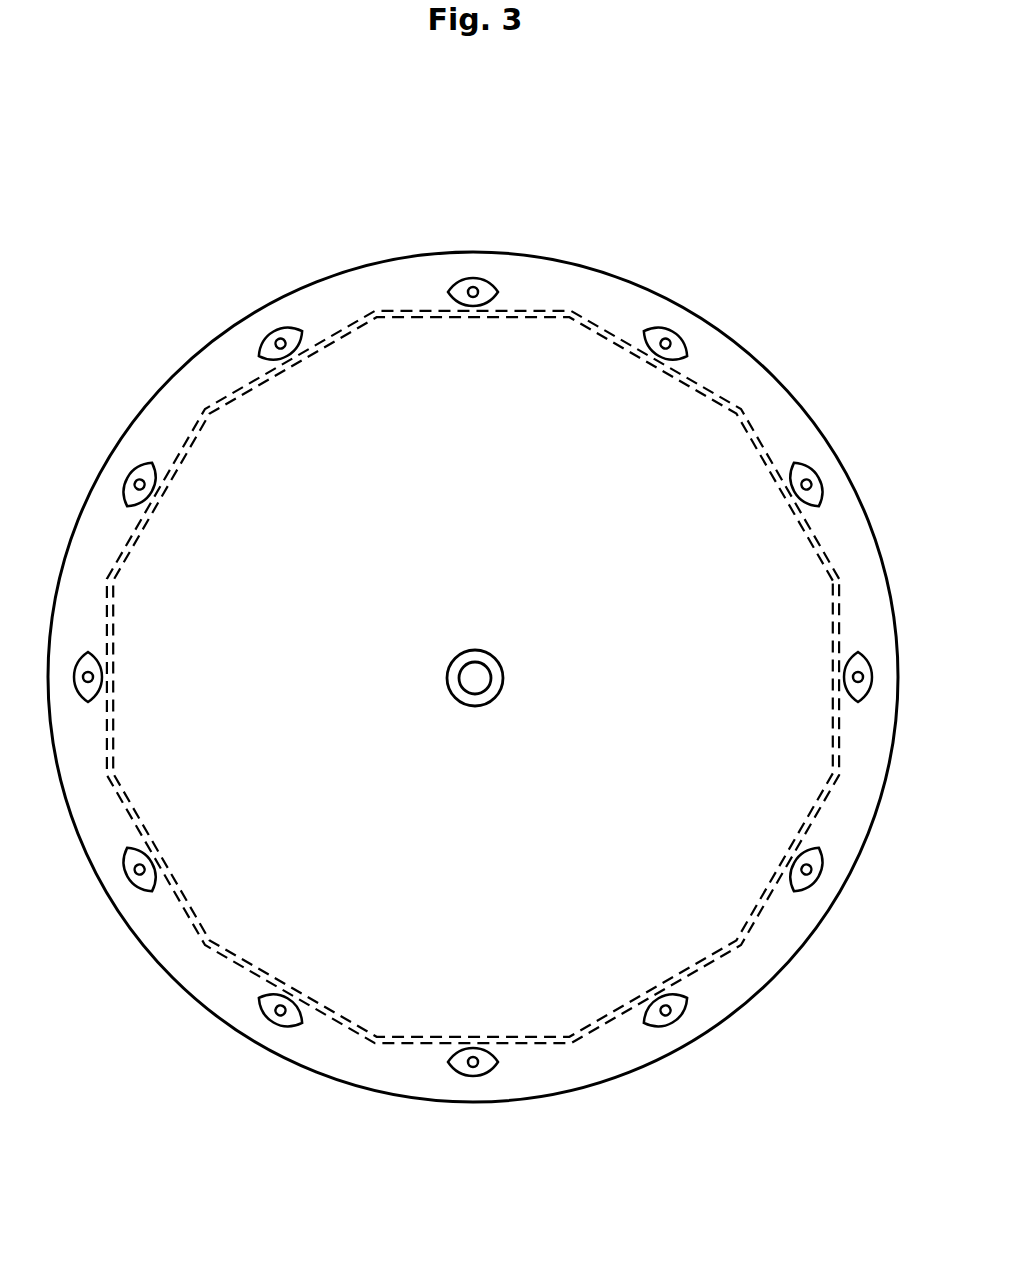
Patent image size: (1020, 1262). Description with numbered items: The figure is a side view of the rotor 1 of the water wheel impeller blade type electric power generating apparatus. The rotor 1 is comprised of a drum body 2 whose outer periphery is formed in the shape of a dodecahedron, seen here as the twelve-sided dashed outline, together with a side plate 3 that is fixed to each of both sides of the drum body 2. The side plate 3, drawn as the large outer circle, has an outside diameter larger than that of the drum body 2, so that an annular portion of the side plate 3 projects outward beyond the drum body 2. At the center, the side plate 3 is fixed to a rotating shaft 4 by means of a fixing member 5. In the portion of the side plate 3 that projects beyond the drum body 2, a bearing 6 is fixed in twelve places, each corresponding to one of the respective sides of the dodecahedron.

The rotor 1 is at (540, 225).
The drum body 2 is at (542, 312).
The side plate 3 is at (612, 276).
The rotating shaft 4 is at (484, 672).
The fixing member 5 is at (488, 694).
The bearing 6 is at (663, 336).